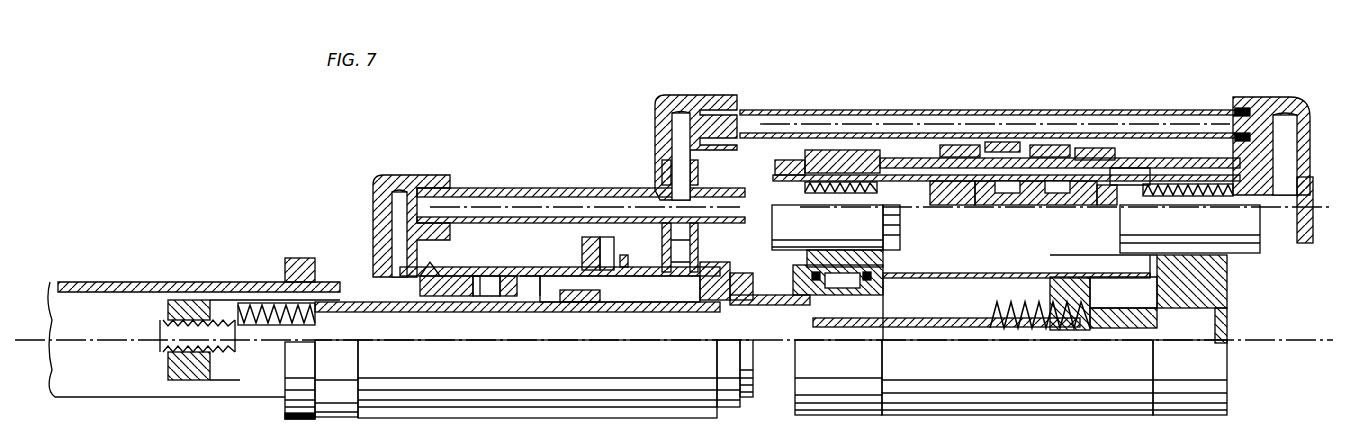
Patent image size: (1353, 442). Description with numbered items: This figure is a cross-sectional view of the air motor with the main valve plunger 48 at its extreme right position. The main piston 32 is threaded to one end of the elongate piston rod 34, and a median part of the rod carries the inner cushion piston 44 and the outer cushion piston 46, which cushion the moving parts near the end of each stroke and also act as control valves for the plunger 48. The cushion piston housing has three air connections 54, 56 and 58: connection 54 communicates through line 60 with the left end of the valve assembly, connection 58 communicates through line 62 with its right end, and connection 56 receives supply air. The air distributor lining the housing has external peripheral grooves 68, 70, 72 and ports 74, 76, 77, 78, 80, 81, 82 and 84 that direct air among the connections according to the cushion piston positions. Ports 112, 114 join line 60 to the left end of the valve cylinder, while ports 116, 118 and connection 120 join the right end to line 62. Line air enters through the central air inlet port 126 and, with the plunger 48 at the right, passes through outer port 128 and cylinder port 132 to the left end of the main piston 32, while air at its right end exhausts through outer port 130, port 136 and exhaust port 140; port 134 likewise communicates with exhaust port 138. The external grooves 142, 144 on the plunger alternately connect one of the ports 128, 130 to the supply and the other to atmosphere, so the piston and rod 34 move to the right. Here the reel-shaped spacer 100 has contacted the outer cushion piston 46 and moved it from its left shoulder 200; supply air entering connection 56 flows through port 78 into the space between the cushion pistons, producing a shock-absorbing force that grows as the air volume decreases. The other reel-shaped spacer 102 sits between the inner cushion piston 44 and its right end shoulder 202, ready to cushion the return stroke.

The main piston 32 is at (1094, 296).
The piston rod 34 is at (945, 340).
The inner cushion piston 44 is at (612, 316).
The outer cushion piston 46 is at (462, 318).
The main valve plunger 48 is at (1022, 198).
The air connection 54 is at (398, 230).
The air connection 56 is at (593, 245).
The air connection 58 is at (678, 240).
The line 60 is at (510, 205).
The line 62 is at (818, 125).
The external peripheral groove 68 is at (375, 280).
The external peripheral groove 70 is at (510, 276).
The external peripheral groove 72 is at (712, 280).
The port 74 is at (415, 318).
The port 76 is at (478, 290).
The port 77 is at (495, 290).
The port 78 is at (547, 295).
The port 80 is at (575, 298).
The port 81 is at (625, 258).
The port 82 is at (700, 312).
The port 84 is at (745, 285).
The reel-shaped spacer 100 is at (345, 325).
The reel-shaped spacer 102 is at (918, 300).
The port 112 is at (790, 172).
The port 114 is at (900, 192).
The port 116 is at (1140, 195).
The port 118 is at (1250, 195).
The connection 120 is at (1283, 140).
The central air inlet port 126 is at (1005, 145).
The outer port 128 is at (960, 150).
The outer port 130 is at (1050, 150).
The cylinder port 132 is at (840, 285).
The port 134 is at (948, 180).
The port 136 is at (1095, 150).
The exhaust port 138 is at (905, 160).
The exhaust port 140 is at (1130, 168).
The external groove 142 is at (982, 200).
The external groove 144 is at (1100, 200).
The left shoulder 200 is at (375, 320).
The right end shoulder 202 is at (800, 320).